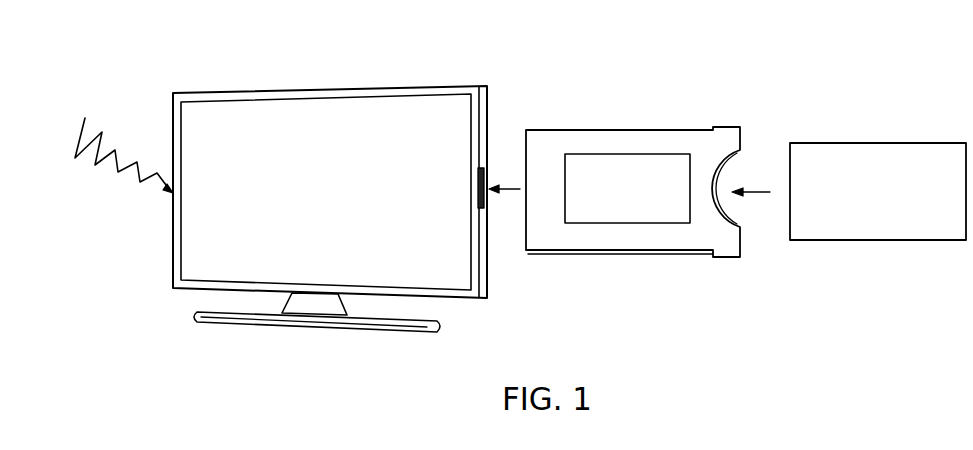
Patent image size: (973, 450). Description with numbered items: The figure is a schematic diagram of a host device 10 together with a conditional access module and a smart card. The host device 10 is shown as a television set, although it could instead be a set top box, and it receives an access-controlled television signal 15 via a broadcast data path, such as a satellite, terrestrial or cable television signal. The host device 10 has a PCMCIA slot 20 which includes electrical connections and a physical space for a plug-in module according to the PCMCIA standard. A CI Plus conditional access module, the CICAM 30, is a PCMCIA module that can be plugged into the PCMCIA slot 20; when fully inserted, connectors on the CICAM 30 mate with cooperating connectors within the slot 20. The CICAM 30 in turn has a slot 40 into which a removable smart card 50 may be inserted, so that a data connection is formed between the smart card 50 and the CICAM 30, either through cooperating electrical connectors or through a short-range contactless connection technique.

The host device 10 is at (360, 92).
The access-controlled television signal 15 is at (103, 172).
The PCMCIA slot 20 is at (489, 183).
The CICAM 30 is at (640, 138).
The slot 40 is at (718, 182).
The smart card 50 is at (882, 142).